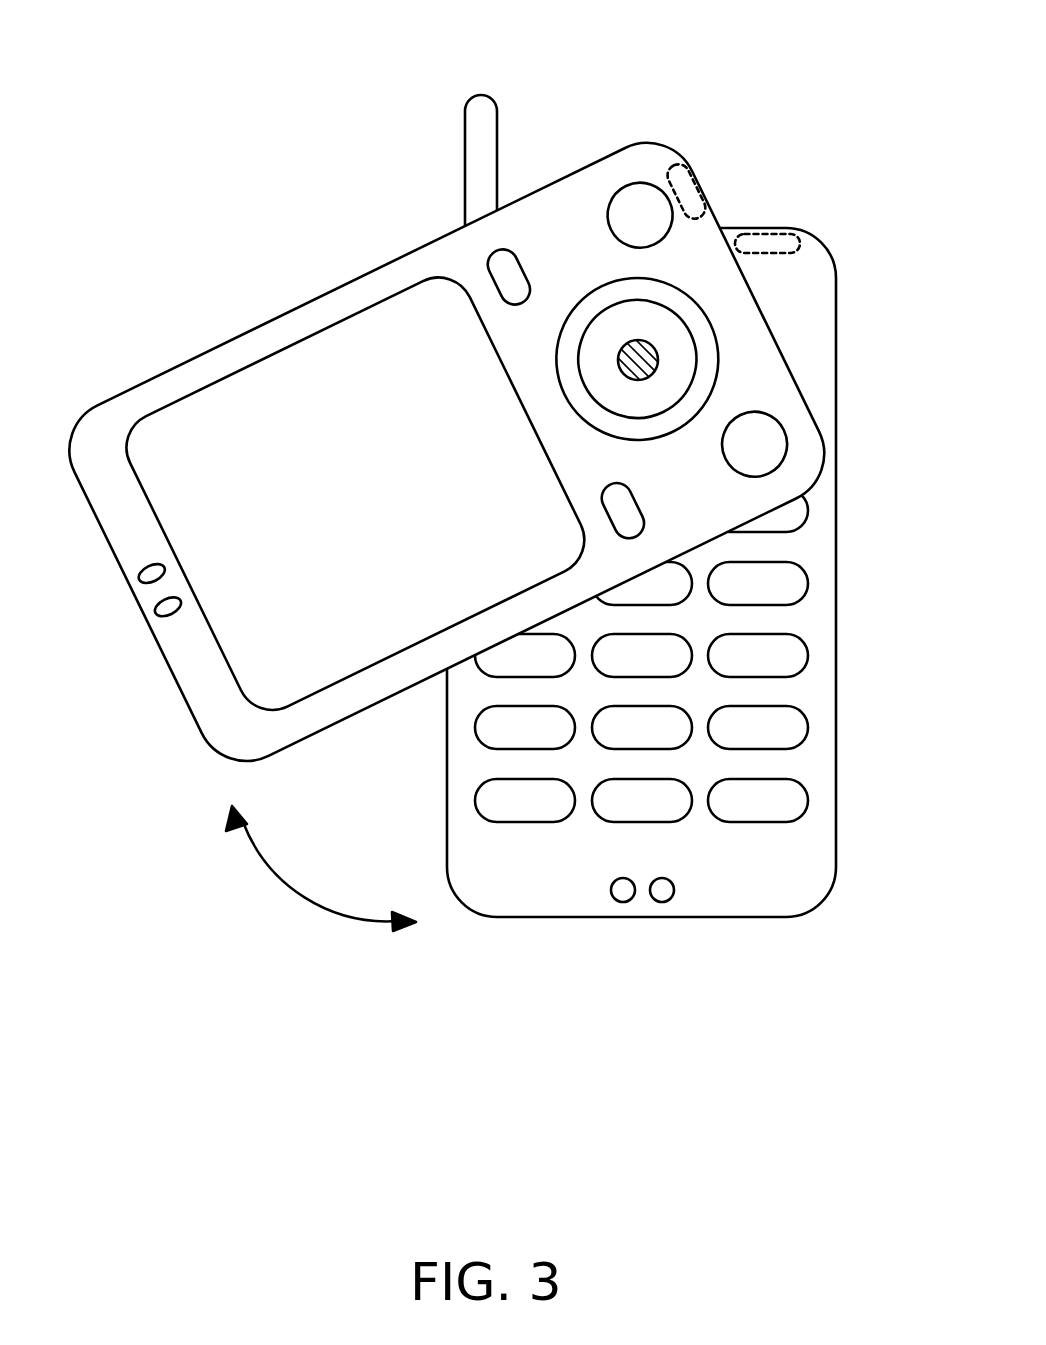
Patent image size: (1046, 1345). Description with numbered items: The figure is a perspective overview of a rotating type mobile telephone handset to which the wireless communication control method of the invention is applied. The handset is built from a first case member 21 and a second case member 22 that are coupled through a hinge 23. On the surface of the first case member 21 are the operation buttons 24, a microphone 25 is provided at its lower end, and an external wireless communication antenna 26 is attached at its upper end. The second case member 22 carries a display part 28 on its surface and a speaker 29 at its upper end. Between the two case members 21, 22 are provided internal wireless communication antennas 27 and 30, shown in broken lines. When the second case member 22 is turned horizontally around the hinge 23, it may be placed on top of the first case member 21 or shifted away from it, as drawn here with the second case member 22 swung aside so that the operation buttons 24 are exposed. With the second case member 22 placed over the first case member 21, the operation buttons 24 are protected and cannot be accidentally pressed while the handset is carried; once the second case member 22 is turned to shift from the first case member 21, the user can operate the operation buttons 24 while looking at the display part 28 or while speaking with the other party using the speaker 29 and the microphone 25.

The first case member 21 is at (836, 679).
The second case member 22 is at (350, 282).
The hinge 23 is at (658, 358).
The operation buttons 24 is at (808, 798).
The microphone 25 is at (662, 902).
The external wireless communication antenna 26 is at (481, 93).
The internal wireless communication antenna 27 is at (785, 232).
The display part 28 is at (250, 368).
The speaker 29 is at (127, 583).
The internal wireless communication antenna 30 is at (699, 175).